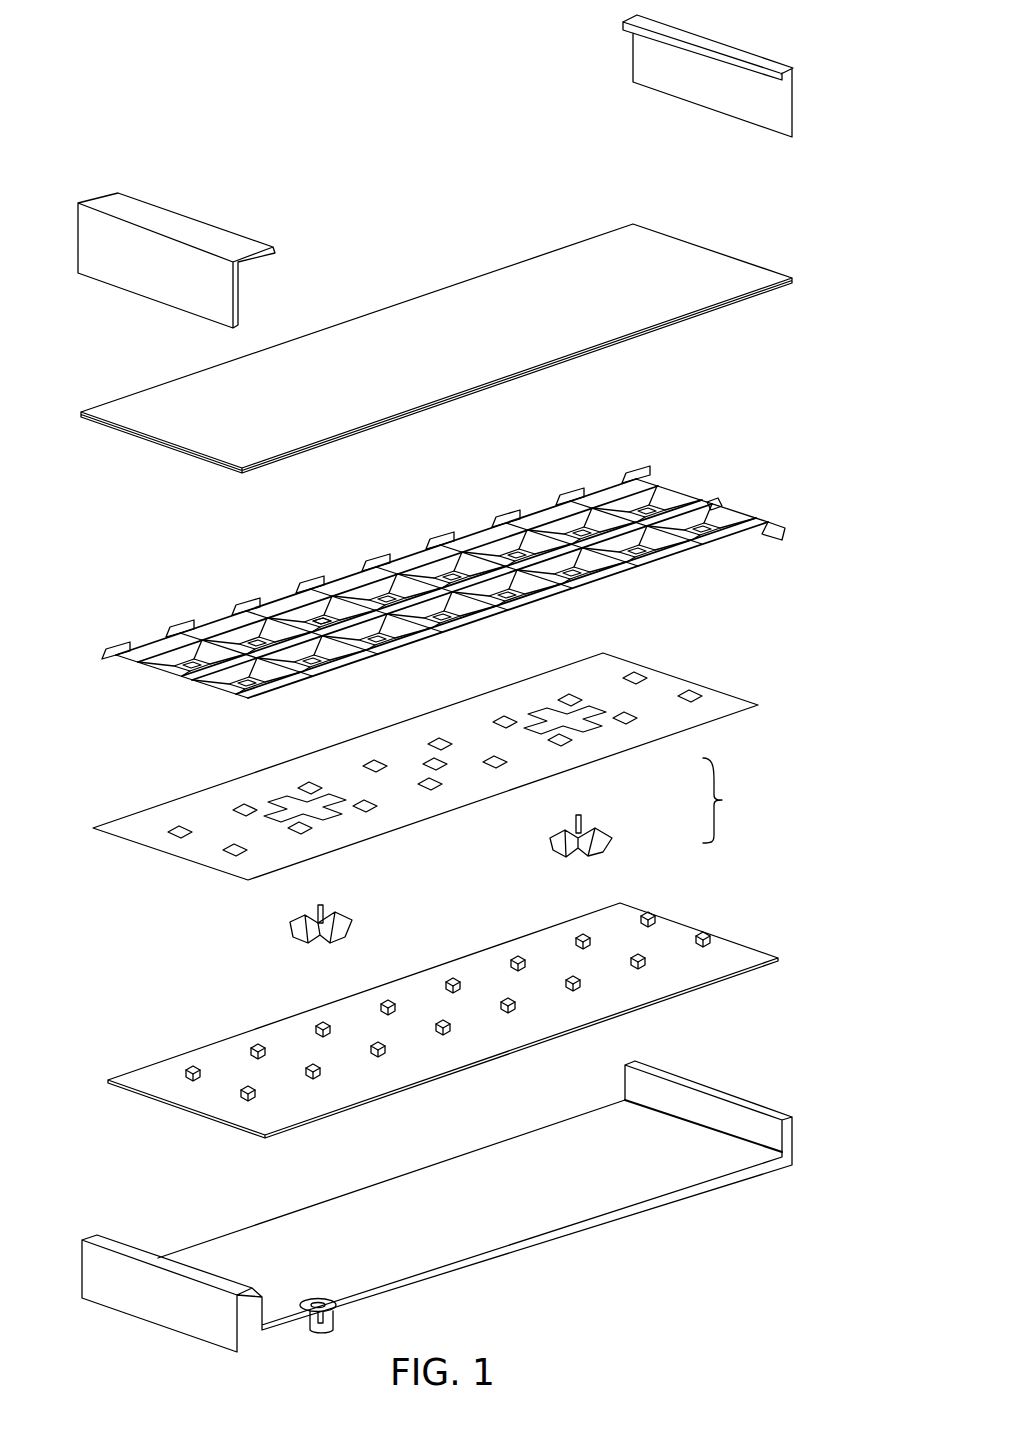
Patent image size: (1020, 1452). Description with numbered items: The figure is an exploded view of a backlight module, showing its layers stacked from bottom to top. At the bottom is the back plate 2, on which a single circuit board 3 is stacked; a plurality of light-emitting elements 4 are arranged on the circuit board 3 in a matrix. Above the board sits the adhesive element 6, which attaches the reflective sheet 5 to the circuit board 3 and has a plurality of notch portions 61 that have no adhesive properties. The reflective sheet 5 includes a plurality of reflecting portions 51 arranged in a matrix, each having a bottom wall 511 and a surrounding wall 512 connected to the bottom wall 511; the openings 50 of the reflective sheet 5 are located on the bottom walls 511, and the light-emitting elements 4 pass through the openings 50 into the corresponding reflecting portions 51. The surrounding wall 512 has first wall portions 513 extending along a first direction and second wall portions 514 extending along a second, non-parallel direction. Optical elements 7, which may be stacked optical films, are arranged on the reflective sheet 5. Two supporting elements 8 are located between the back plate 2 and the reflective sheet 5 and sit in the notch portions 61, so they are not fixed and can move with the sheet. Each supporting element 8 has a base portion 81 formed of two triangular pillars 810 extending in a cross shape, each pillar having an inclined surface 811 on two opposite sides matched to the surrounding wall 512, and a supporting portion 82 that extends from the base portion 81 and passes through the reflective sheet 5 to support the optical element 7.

The back plate 2 is at (765, 1193).
The circuit board 3 is at (472, 1001).
The light-emitting elements 4 is at (706, 940).
The reflective sheet 5 is at (458, 548).
The openings 50 is at (333, 613).
The reflecting portions 51 is at (632, 485).
The bottom wall 511 is at (337, 612).
The surrounding wall 512 is at (220, 632).
The first wall portions 513 is at (475, 560).
The second wall portions 514 is at (423, 567).
The adhesive element 6 is at (435, 740).
The notch portions 61 is at (280, 803).
The optical elements 7 is at (790, 288).
The supporting element 8 is at (466, 884).
The base portion 81 is at (620, 838).
The supporting portion 82 is at (595, 808).
The triangular pillars 810 is at (345, 937).
The inclined surface 811 is at (322, 906).